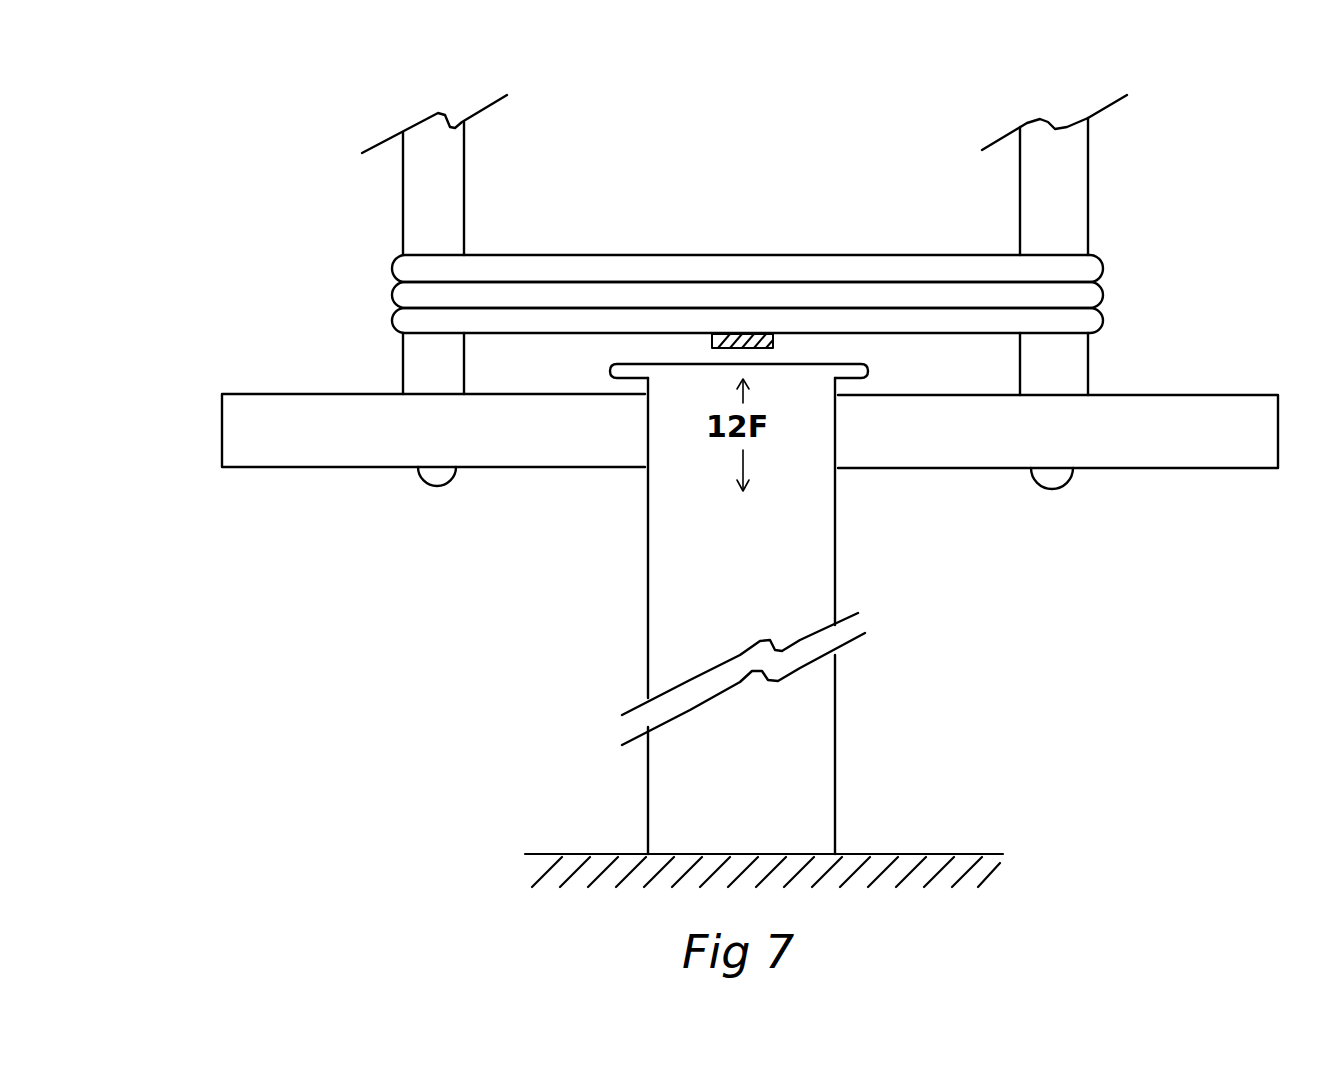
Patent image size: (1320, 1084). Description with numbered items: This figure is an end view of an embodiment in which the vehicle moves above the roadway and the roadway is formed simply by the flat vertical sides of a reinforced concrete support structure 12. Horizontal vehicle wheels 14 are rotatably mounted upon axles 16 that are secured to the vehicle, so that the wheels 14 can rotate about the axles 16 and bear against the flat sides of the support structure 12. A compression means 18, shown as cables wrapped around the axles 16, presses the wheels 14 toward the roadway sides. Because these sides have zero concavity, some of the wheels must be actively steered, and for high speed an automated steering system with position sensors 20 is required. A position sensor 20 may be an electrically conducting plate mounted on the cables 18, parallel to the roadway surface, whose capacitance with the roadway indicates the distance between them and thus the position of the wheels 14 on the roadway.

The support 12 is at (770, 740).
The vehicle wheel 14 is at (293, 443).
The axle 16 is at (422, 362).
The compression means 18 is at (590, 290).
The position sensor 20 is at (773, 342).